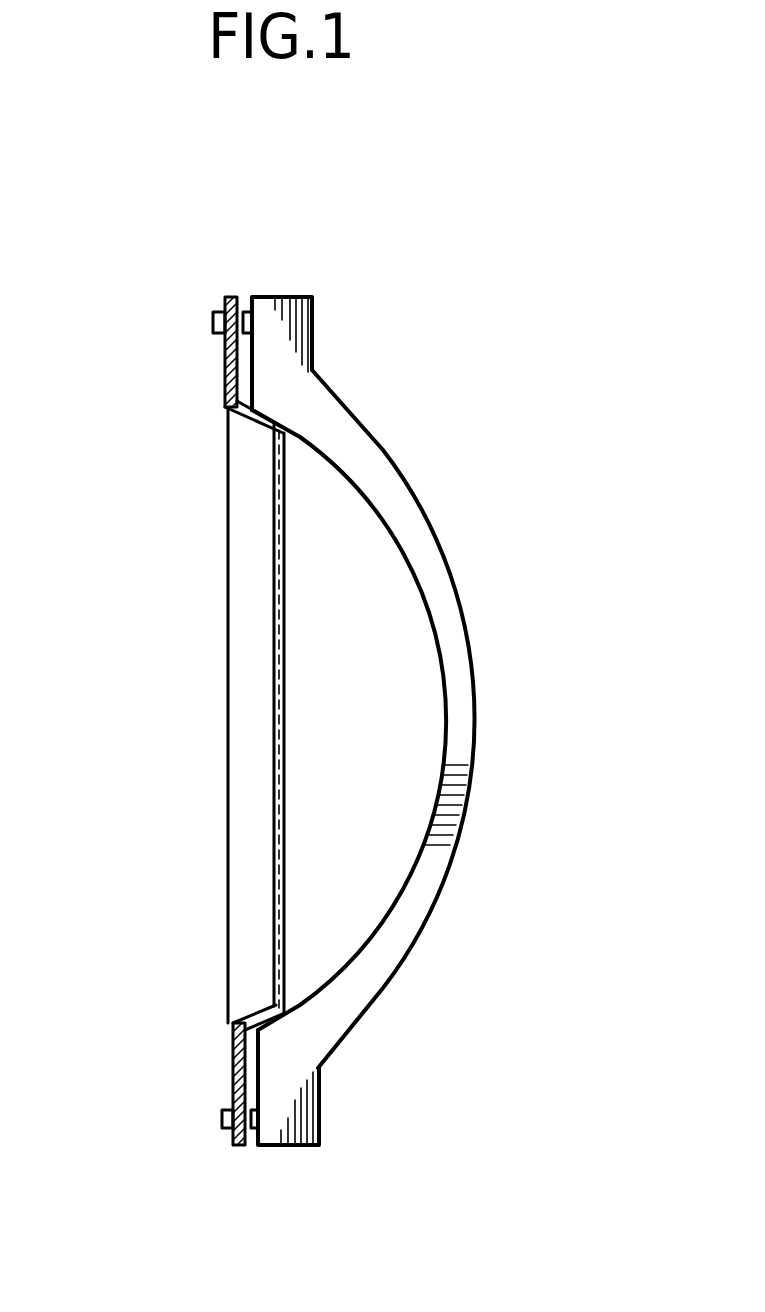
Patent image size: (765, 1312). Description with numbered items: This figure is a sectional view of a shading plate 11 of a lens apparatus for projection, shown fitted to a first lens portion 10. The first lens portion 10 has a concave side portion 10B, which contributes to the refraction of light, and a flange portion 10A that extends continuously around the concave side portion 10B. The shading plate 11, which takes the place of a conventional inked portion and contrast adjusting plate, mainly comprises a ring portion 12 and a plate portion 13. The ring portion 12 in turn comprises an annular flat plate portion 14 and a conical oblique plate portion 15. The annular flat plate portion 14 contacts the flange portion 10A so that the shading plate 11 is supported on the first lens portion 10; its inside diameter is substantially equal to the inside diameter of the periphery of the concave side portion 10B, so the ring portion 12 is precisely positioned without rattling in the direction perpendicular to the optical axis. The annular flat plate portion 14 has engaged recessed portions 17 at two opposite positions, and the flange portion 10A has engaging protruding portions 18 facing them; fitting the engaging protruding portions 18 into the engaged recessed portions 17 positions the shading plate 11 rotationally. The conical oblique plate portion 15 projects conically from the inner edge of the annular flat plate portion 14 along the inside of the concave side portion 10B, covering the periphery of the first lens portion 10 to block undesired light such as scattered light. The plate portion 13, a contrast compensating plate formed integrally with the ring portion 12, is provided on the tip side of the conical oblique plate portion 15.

The first lens portion 10 is at (451, 718).
The flange portion 10A is at (312, 328).
The concave side portion 10B is at (465, 620).
The shading plate 11 is at (225, 567).
The ring portion 12 is at (232, 1073).
The plate portion 13 is at (273, 738).
The annular flat plate portion 14 is at (226, 354).
The conical oblique plate portion 15 is at (257, 1010).
The engaged recessed portion 17 is at (215, 312).
The engaging protruding portion 18 is at (250, 318).